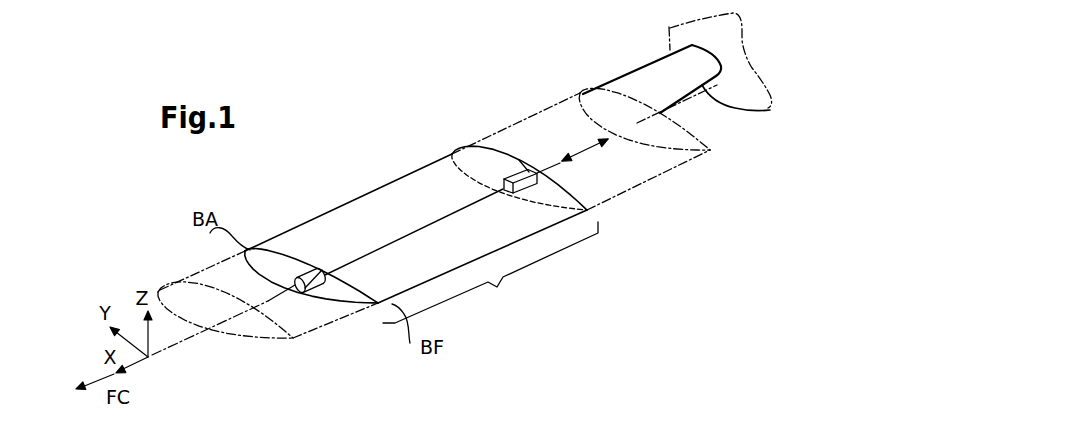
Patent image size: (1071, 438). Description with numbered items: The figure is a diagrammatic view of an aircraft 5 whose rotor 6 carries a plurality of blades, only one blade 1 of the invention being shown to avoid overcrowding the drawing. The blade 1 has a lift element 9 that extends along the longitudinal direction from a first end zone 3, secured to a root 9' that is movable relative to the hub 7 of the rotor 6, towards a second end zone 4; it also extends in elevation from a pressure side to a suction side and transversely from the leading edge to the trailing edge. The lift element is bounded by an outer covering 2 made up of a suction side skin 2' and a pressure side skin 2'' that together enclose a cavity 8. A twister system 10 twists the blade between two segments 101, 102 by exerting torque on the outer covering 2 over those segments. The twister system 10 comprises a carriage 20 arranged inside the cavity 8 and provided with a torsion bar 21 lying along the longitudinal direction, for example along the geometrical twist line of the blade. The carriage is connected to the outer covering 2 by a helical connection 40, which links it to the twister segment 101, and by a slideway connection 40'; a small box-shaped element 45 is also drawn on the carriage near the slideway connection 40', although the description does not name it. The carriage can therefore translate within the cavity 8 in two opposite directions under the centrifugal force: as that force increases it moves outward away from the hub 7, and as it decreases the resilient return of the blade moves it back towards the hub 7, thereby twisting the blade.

The blade 1 is at (353, 115).
The outer covering 2 is at (503, 156).
The suction side skin 2' is at (414, 196).
The pressure side skin 2'' is at (648, 201).
The carriage 20 is at (328, 230).
The torsion bar 21 is at (408, 225).
The first end zone 3 is at (583, 86).
The second end zone 4 is at (265, 356).
The aircraft 5 is at (640, 313).
The rotor 6 is at (742, 180).
The hub 7 is at (757, 112).
The cavity 8 is at (238, 312).
The lift element 9 is at (649, 169).
The root 9' is at (652, 64).
The twister system 10 is at (490, 272).
The twister segment 101 is at (358, 314).
The second segment 102 is at (600, 212).
The helical connection 40 is at (305, 326).
The slideway connection 40' is at (585, 212).
The sensor box 45 is at (495, 167).